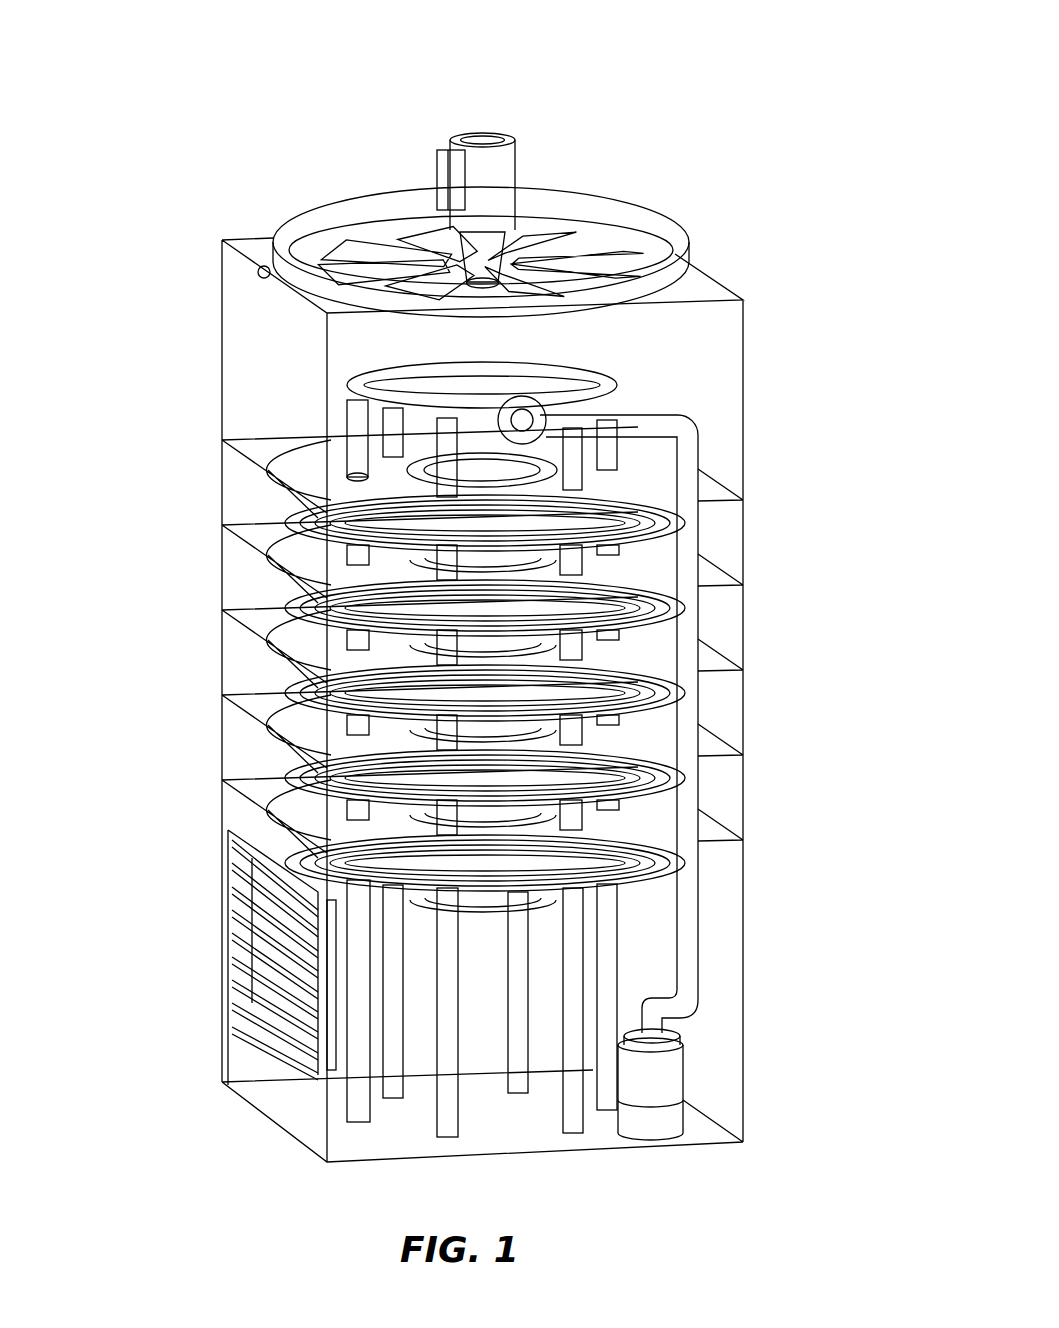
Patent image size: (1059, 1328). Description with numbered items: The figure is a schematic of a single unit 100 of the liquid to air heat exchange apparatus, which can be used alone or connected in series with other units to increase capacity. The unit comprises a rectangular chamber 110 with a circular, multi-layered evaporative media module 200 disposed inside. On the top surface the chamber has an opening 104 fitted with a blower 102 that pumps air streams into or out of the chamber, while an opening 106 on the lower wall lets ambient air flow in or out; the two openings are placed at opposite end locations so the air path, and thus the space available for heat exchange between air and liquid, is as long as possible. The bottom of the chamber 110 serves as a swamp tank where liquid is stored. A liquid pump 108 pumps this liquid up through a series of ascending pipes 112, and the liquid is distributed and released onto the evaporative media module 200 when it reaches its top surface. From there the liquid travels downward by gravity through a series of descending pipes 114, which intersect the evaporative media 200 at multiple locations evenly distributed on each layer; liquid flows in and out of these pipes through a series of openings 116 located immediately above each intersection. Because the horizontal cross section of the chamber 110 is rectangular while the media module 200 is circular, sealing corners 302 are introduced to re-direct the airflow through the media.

The single unit of the liquid to air heat exchange apparatus 100 is at (688, 66).
The blower 102 is at (605, 228).
The opening on the top surface 104 is at (660, 282).
The opening on the lower wall 106 is at (292, 907).
The liquid pump 108 is at (660, 1082).
The rectangular chamber 110 is at (728, 348).
The ascending pipes 112 is at (697, 945).
The descending pipes 114 is at (363, 437).
The openings 116 is at (360, 472).
The circular evaporative media module 200 is at (642, 680).
The sealing corners 302 is at (274, 697).